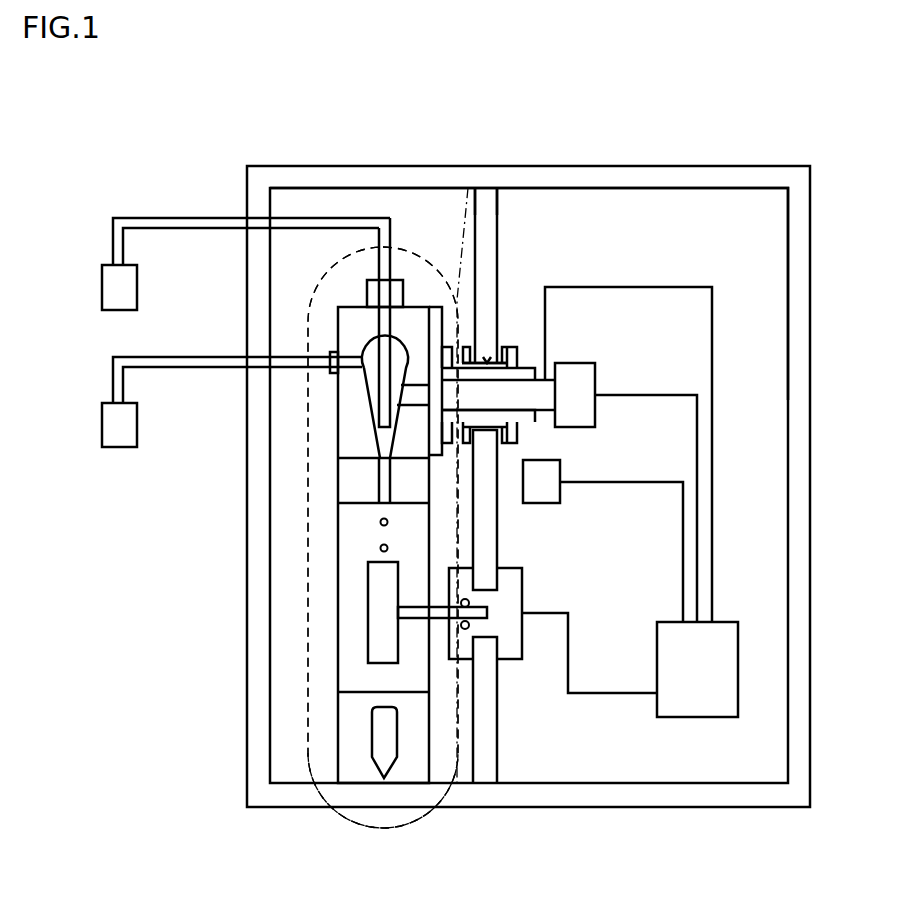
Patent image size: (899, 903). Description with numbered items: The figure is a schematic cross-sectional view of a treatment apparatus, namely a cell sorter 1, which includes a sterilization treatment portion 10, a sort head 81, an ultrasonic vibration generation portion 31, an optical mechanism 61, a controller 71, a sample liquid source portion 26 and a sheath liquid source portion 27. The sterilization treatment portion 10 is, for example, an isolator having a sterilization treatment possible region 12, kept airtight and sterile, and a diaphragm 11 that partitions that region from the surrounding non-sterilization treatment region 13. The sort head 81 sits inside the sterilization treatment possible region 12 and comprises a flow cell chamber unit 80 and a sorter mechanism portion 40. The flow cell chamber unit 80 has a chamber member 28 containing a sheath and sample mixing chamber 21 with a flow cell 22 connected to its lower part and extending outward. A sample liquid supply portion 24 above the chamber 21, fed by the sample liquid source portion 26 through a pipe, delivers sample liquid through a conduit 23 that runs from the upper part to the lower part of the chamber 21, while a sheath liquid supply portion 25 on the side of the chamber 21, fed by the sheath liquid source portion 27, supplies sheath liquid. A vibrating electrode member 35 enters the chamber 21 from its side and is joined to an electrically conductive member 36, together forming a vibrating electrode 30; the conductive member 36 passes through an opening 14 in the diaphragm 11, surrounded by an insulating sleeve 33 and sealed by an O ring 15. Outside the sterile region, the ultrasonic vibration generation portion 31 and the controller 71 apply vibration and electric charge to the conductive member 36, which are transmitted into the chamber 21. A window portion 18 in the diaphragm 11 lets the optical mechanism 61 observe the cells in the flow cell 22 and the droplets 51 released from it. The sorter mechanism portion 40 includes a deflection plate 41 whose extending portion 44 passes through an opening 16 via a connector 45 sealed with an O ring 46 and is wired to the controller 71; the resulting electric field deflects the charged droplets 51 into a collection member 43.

The cell sorter 1 is at (799, 139).
The sterilization treatment portion 10 is at (757, 797).
The diaphragm 11 is at (488, 215).
The sterilization treatment possible region 12 is at (302, 207).
The non-sterilization treatment region 13 is at (678, 205).
The opening 14 is at (468, 188).
The O ring 15 is at (463, 347).
The opening 16 is at (487, 637).
The window portion 18 is at (490, 465).
The sheath and sample mixing chamber 21 is at (372, 393).
The flow cell 22 is at (385, 485).
The conduit 23 is at (383, 375).
The sample liquid supply portion 24 is at (400, 283).
The sheath liquid supply portion 25 is at (350, 362).
The sample liquid source portion 26 is at (102, 288).
The sheath liquid source portion 27 is at (102, 427).
The chamber member 28 is at (352, 442).
The vibrating electrode 30 is at (565, 75).
The ultrasonic vibration generation portion 31 is at (577, 382).
The insulating sleeve 33 is at (517, 377).
The vibrating electrode member 35 is at (445, 347).
The electrically conductive member 36 is at (495, 392).
The sorter mechanism portion 40 is at (296, 639).
The deflection plate 41 is at (385, 640).
The collection member 43 is at (385, 748).
The extending portion 44 is at (417, 615).
The connector 45 is at (510, 593).
The O ring 46 is at (466, 632).
The droplets 51 is at (380, 548).
The optical mechanism 61 is at (543, 490).
The controller 71 is at (717, 668).
The flow cell chamber unit 80 is at (339, 289).
The sort head 81 is at (370, 828).